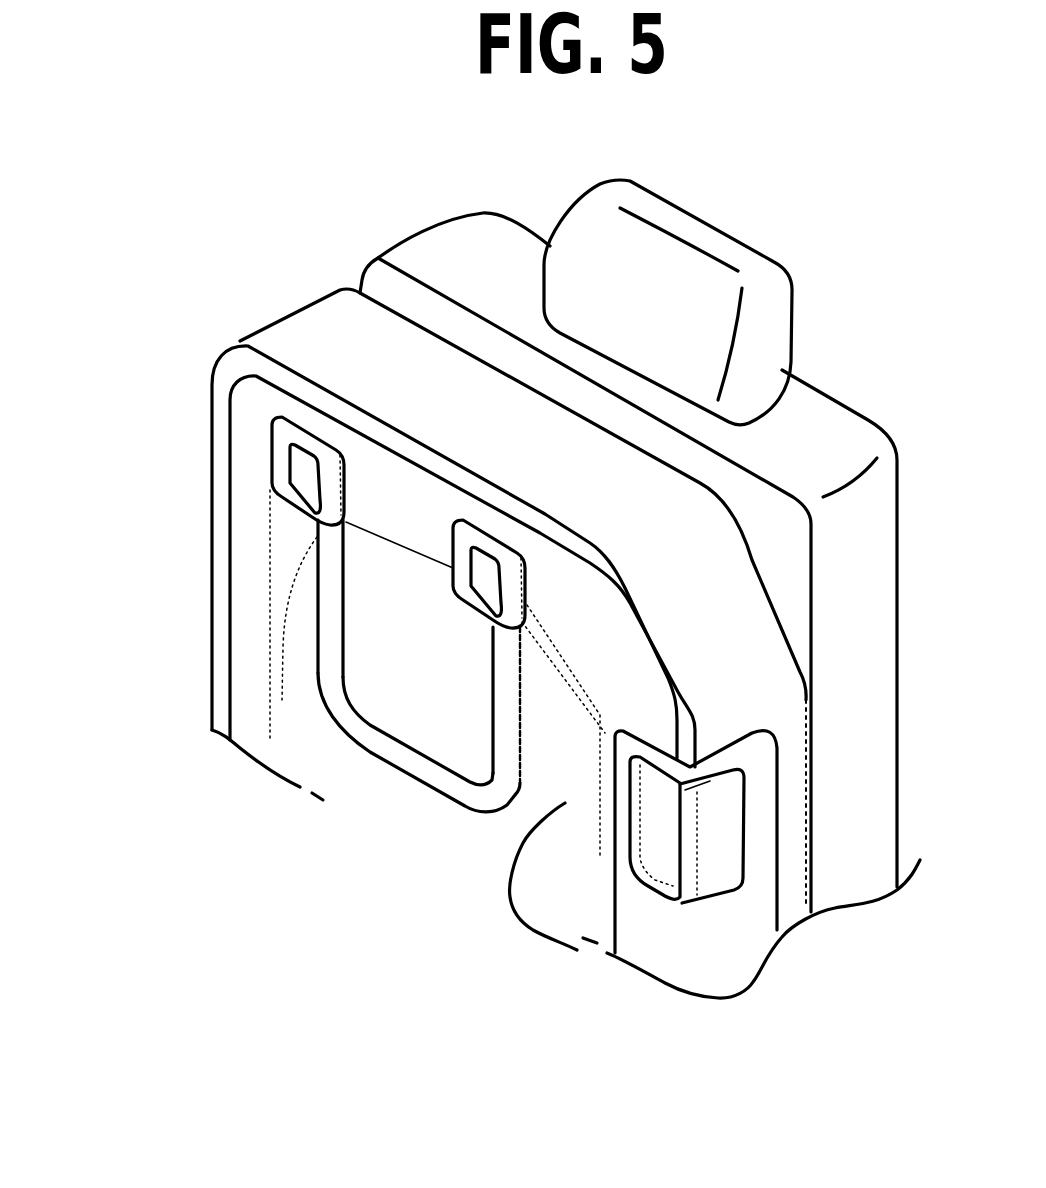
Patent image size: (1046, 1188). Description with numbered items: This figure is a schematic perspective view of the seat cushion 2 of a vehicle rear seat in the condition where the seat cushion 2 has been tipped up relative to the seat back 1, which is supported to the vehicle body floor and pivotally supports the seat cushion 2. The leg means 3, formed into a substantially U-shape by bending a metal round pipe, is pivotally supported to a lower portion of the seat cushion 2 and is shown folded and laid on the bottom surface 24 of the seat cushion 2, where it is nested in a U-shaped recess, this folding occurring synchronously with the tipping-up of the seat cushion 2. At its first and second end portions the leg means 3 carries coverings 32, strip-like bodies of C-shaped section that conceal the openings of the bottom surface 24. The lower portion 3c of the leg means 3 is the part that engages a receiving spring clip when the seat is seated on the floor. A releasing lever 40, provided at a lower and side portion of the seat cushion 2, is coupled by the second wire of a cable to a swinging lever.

The seat back 1 is at (802, 437).
The seat cushion 2 is at (252, 337).
The leg means 3 is at (381, 755).
The lower portion 3c is at (373, 747).
The bottom surface 24 is at (577, 950).
The coverings 32 is at (303, 477).
The releasing lever 40 is at (718, 843).